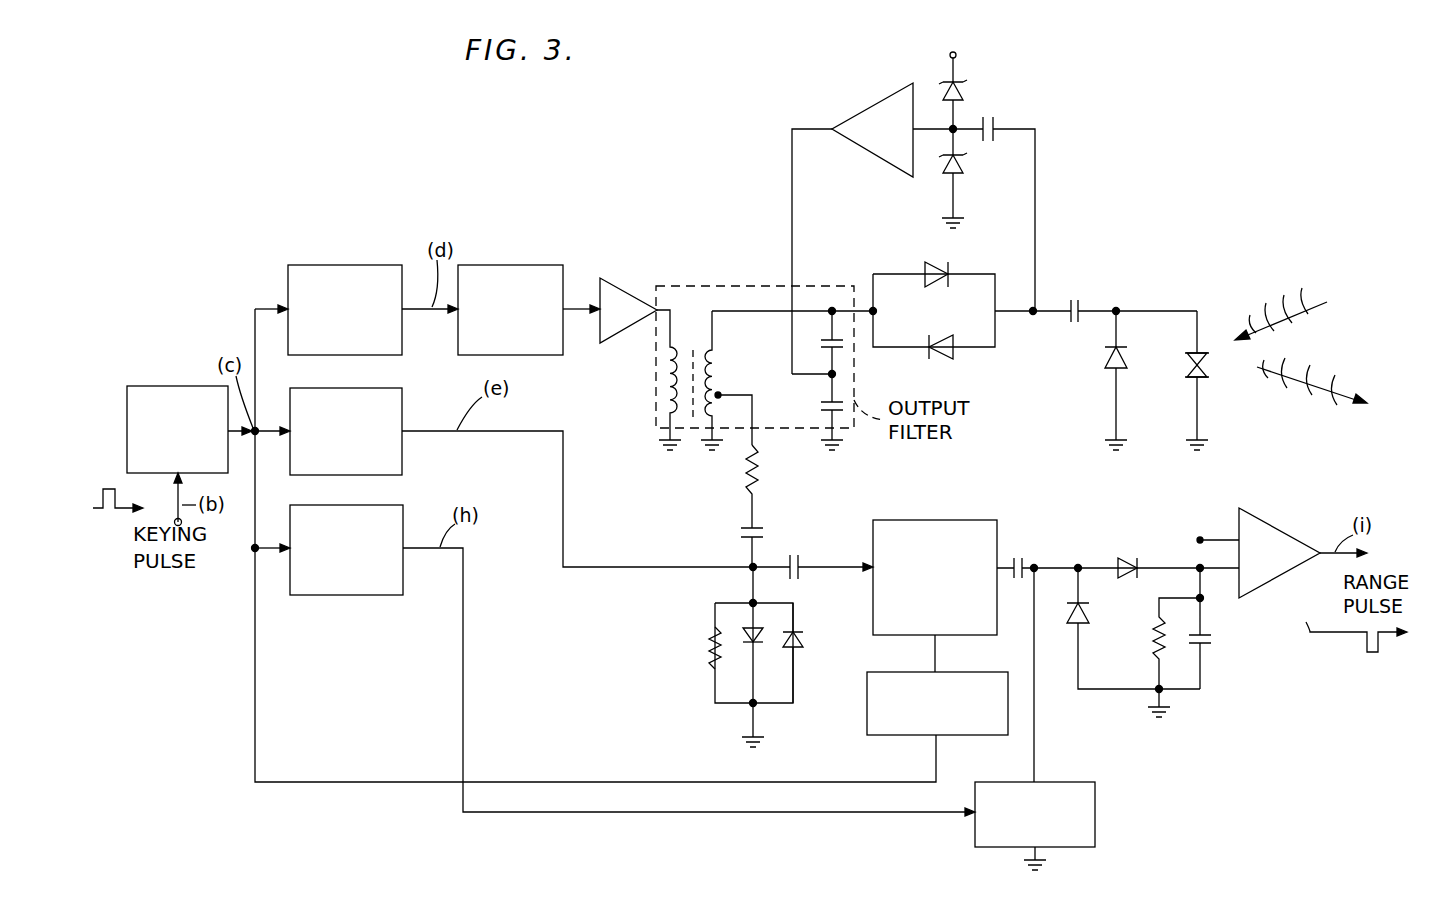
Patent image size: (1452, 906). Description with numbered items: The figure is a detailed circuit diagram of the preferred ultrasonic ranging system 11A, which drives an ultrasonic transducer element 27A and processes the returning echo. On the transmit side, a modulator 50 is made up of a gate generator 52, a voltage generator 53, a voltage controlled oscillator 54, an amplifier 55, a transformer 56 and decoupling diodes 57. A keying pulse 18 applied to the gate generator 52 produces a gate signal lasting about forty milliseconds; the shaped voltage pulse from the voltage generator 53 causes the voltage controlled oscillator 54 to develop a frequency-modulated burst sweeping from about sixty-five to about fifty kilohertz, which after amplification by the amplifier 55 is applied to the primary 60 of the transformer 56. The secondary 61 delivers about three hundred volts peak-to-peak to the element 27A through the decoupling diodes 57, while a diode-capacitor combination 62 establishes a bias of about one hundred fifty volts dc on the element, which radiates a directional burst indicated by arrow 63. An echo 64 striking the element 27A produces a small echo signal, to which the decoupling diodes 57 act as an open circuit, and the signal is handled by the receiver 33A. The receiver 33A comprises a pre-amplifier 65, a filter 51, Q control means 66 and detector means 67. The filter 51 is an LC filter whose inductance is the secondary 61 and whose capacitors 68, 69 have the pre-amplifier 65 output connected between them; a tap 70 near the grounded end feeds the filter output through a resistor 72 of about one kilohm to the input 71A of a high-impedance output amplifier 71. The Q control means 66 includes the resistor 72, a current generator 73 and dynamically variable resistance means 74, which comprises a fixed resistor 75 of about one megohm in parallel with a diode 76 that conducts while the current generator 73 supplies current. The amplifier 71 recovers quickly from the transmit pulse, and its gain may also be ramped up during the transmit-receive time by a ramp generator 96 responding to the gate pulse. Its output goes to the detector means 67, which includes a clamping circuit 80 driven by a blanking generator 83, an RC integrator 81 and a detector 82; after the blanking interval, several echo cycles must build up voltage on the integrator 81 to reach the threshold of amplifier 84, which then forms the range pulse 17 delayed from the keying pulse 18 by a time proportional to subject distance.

The ultrasonic ranging system 11A is at (718, 192).
The range pulse 17 is at (1380, 645).
The keying pulse 18 is at (115, 493).
The ultrasonic transducer element 27A is at (1205, 368).
The receiver 33A is at (768, 832).
The modulator 50 is at (438, 205).
The filter 51 is at (808, 286).
The gate generator 52 is at (160, 386).
The voltage generator 53 is at (336, 265).
The voltage controlled oscillator 54 is at (516, 265).
The amplifier 55 is at (622, 300).
The transformer 56 is at (693, 445).
The decoupling diodes 57 is at (962, 335).
The primary 60 is at (667, 382).
The secondary 61 is at (716, 360).
The diode-capacitor combination 62 is at (1105, 325).
The arrow indicating radiated burst 63 is at (1335, 380).
The echo 64 is at (1260, 312).
The pre-amplifier 65 is at (1016, 192).
The Q control means 66 is at (592, 602).
The detector means 67 is at (1093, 580).
The capacitor 68 is at (843, 352).
The capacitor 69 is at (840, 418).
The tap 70 is at (730, 390).
The high-impedance output amplifier 71 is at (945, 518).
The input 71A is at (808, 565).
The resistor 72 is at (748, 485).
The current generator 73 is at (402, 458).
The dynamically variable resistance means 74 is at (736, 682).
The fixed resistor 75 is at (705, 650).
The diode 76 is at (745, 625).
The clamping circuit 80 is at (1095, 818).
The RC integrator 81 is at (1224, 642).
The detector 82 is at (1127, 555).
The blanking generator 83 is at (352, 595).
The amplifier 84 is at (1270, 538).
The ramp generator 96 is at (970, 735).